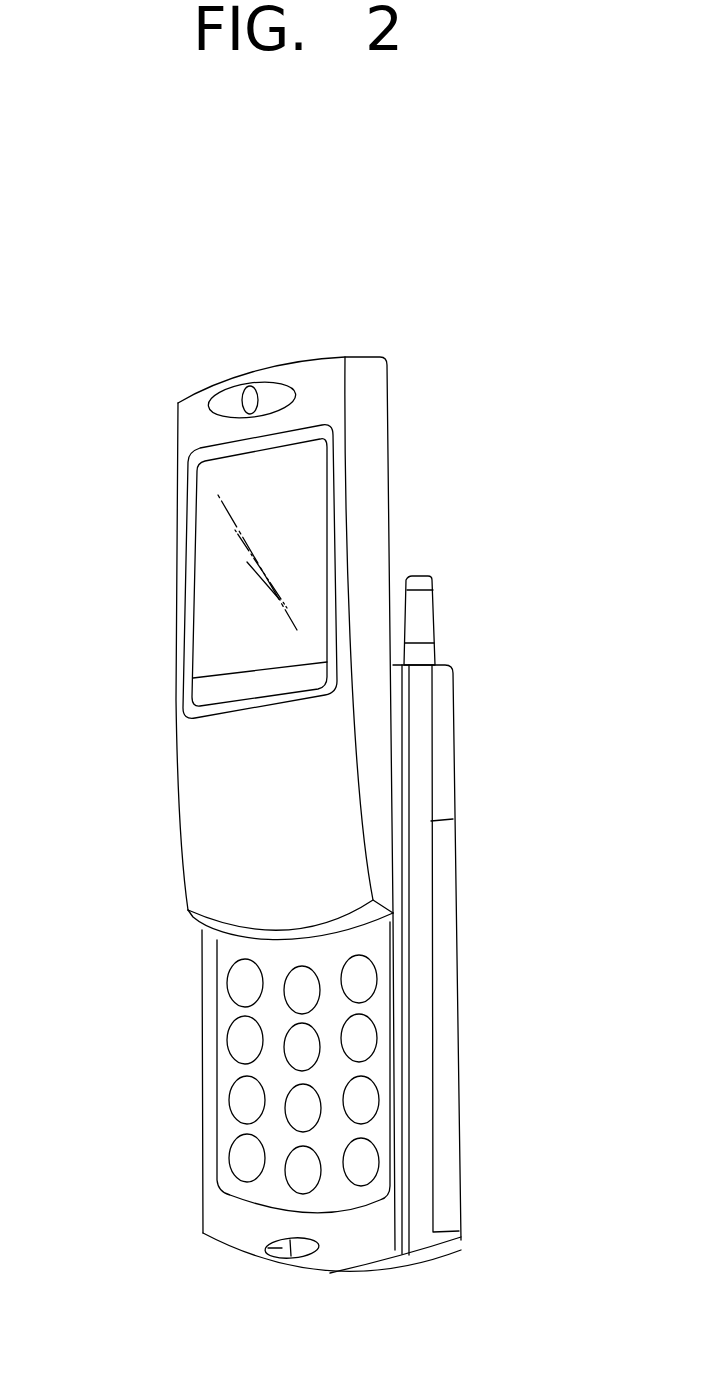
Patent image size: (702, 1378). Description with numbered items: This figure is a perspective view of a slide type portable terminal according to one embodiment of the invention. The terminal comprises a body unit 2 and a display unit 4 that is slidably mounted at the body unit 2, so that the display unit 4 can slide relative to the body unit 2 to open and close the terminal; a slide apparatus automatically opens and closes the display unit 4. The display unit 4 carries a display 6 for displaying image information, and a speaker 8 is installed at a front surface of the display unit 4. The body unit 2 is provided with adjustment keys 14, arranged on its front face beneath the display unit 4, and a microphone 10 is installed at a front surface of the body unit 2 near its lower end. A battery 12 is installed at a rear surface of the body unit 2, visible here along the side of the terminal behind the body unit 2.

The body unit 2 is at (430, 1057).
The display unit 4 is at (203, 777).
The display 6 is at (213, 540).
The speaker 8 is at (177, 402).
The microphone 10 is at (267, 1248).
The battery 12 is at (443, 948).
The adjustment keys 14 is at (230, 1102).